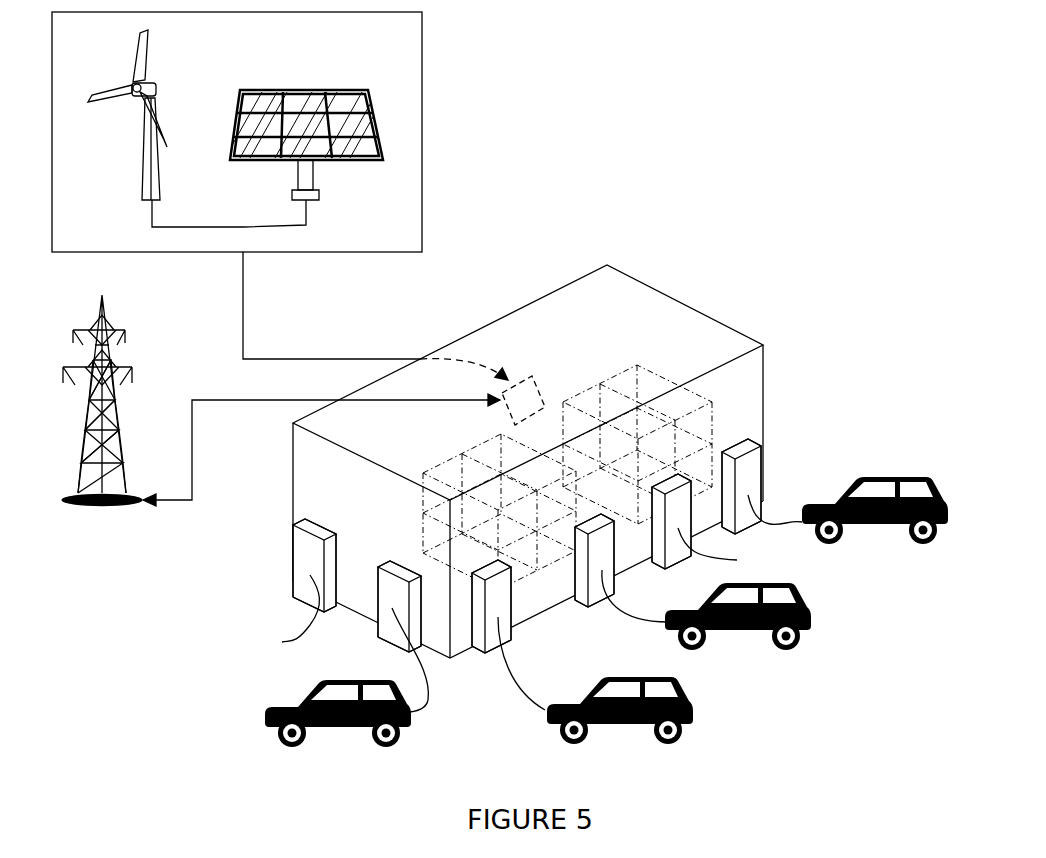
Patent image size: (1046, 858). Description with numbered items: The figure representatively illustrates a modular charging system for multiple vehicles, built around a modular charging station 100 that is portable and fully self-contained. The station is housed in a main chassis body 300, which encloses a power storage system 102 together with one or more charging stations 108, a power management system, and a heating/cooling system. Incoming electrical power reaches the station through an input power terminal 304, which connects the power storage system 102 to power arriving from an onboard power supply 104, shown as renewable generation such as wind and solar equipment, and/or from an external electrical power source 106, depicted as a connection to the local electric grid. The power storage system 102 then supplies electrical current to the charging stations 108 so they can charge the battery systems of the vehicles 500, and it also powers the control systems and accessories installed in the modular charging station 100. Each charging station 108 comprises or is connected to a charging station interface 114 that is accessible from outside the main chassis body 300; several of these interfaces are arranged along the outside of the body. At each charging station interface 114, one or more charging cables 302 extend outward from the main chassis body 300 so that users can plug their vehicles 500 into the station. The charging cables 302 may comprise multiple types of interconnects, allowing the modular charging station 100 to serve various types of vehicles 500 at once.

The modular charging station 100 is at (623, 228).
The power storage system 102 is at (440, 480).
The onboard power supply 104 is at (422, 119).
The external electrical power source 106 is at (122, 505).
The charging station 108 is at (720, 428).
The charging station interface 114 is at (308, 568).
The main chassis body 300 is at (294, 467).
The charging cable 302 is at (300, 630).
The input power terminal 304 is at (533, 376).
The vehicle 500 is at (882, 535).